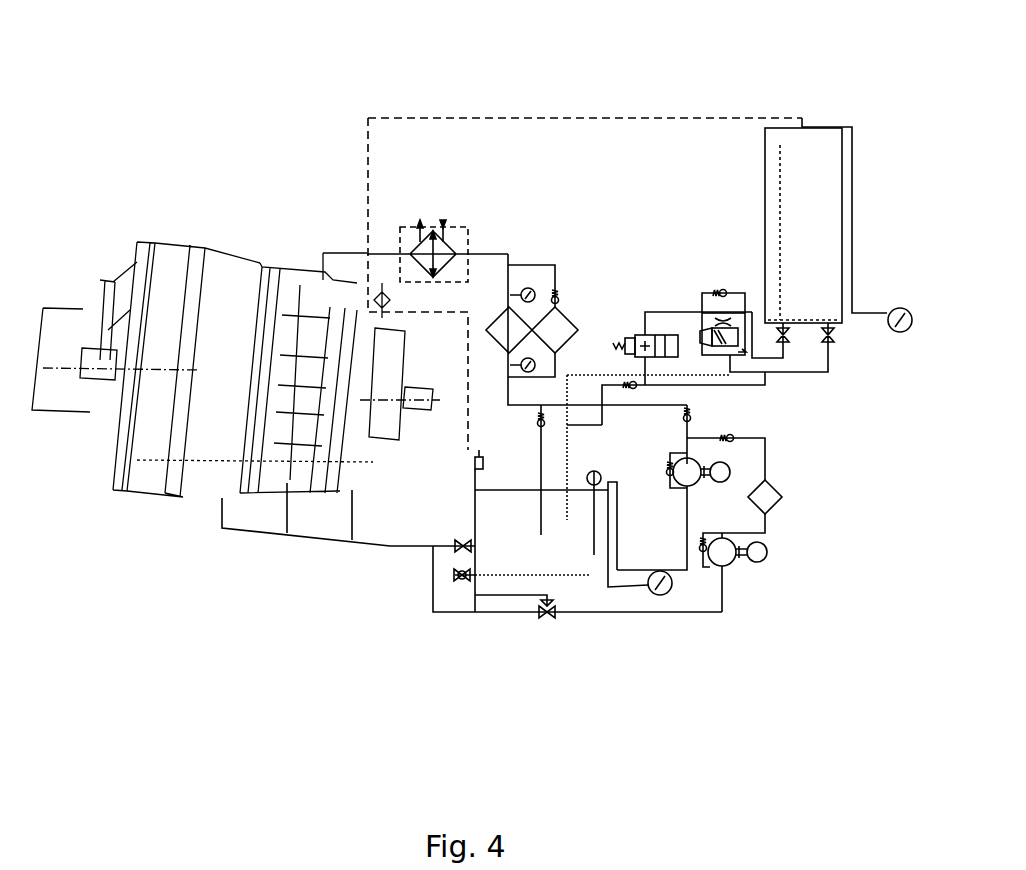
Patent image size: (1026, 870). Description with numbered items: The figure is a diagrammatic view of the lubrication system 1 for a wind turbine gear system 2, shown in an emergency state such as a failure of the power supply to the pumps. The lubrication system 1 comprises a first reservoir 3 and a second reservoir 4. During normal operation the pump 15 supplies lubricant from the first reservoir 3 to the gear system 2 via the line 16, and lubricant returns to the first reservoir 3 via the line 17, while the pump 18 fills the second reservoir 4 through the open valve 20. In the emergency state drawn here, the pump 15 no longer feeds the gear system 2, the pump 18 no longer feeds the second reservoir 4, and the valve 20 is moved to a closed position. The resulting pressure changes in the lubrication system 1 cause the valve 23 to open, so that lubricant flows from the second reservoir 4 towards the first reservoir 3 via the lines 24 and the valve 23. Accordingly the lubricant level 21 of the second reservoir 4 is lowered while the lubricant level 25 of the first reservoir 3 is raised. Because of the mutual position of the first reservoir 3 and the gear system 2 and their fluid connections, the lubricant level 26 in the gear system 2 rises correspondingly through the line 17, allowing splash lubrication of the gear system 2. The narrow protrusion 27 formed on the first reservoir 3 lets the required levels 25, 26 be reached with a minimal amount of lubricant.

The lubrication system 1 is at (133, 88).
The gear system 2 is at (137, 486).
The first reservoir 3 is at (500, 545).
The second reservoir 4 is at (815, 228).
The pump 15 is at (703, 463).
The line 16 is at (485, 252).
The line 17 is at (316, 540).
The pump 18 is at (727, 560).
The valve 20 is at (626, 336).
The lubricant level 21 is at (802, 319).
The valve 23 is at (713, 333).
The lines 24 is at (805, 358).
The lubricant level 25 is at (482, 467).
The lubricant level 26 is at (198, 462).
The narrow protrusion 27 is at (470, 465).